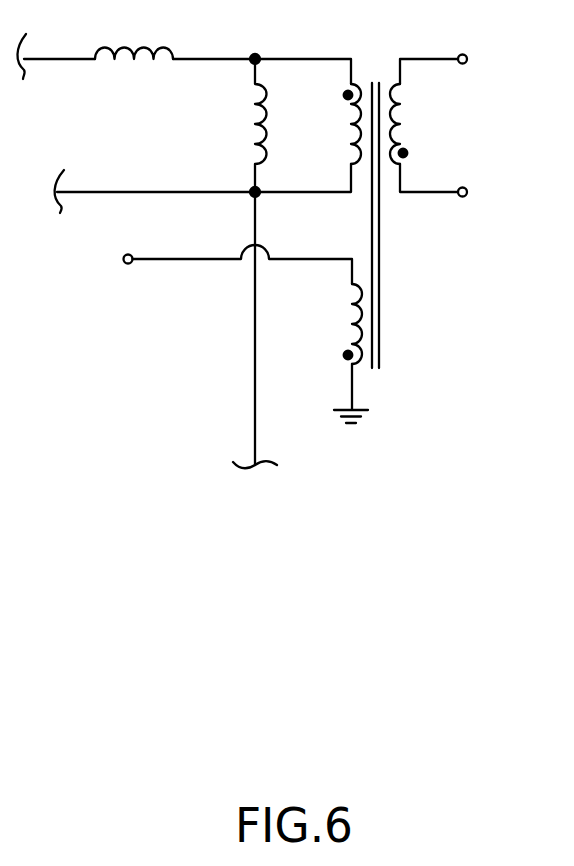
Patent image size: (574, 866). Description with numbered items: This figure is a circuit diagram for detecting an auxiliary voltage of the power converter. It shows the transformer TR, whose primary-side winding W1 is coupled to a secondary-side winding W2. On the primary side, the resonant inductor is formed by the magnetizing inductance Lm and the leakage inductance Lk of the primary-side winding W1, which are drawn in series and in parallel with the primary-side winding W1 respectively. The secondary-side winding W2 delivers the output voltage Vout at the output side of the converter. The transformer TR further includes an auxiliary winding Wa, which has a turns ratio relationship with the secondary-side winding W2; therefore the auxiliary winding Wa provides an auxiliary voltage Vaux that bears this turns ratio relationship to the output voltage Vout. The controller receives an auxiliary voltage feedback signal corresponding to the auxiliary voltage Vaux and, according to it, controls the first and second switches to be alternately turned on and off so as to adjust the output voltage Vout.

The leakage inductance Lk is at (134, 35).
The magnetizing inductance Lm is at (240, 125).
The primary-side winding W1 is at (332, 95).
The secondary-side winding W2 is at (416, 95).
The transformer TR is at (378, 206).
The auxiliary winding Wa is at (330, 297).
The output voltage Vout is at (466, 126).
The auxiliary voltage Vaux is at (227, 274).